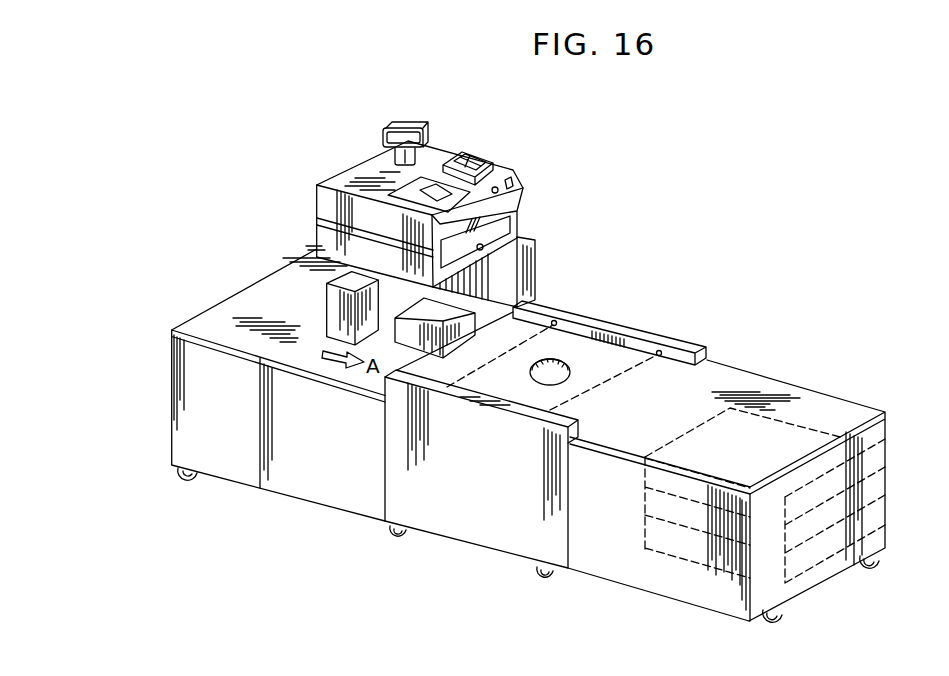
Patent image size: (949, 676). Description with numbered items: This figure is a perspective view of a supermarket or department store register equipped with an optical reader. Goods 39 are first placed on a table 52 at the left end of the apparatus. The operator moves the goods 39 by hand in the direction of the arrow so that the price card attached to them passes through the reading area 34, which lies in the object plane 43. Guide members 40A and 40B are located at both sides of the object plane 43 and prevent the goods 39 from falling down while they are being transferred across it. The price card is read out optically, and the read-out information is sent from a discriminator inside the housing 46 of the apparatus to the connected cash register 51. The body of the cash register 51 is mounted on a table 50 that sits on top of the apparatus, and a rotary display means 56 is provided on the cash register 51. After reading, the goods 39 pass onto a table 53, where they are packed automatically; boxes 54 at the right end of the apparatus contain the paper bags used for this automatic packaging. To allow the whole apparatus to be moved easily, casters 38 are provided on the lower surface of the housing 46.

The reading area 34 is at (574, 362).
The casters 38 is at (770, 616).
The goods 39 is at (465, 305).
The guide member 40A is at (530, 416).
The guide member 40B is at (693, 350).
The object plane 43 is at (620, 353).
The housing 46 is at (477, 545).
The table 50 is at (533, 260).
The cash register 51 is at (360, 168).
The table 52 is at (310, 498).
The table 53 is at (632, 584).
The boxes 54 is at (883, 515).
The rotary display means 56 is at (416, 123).